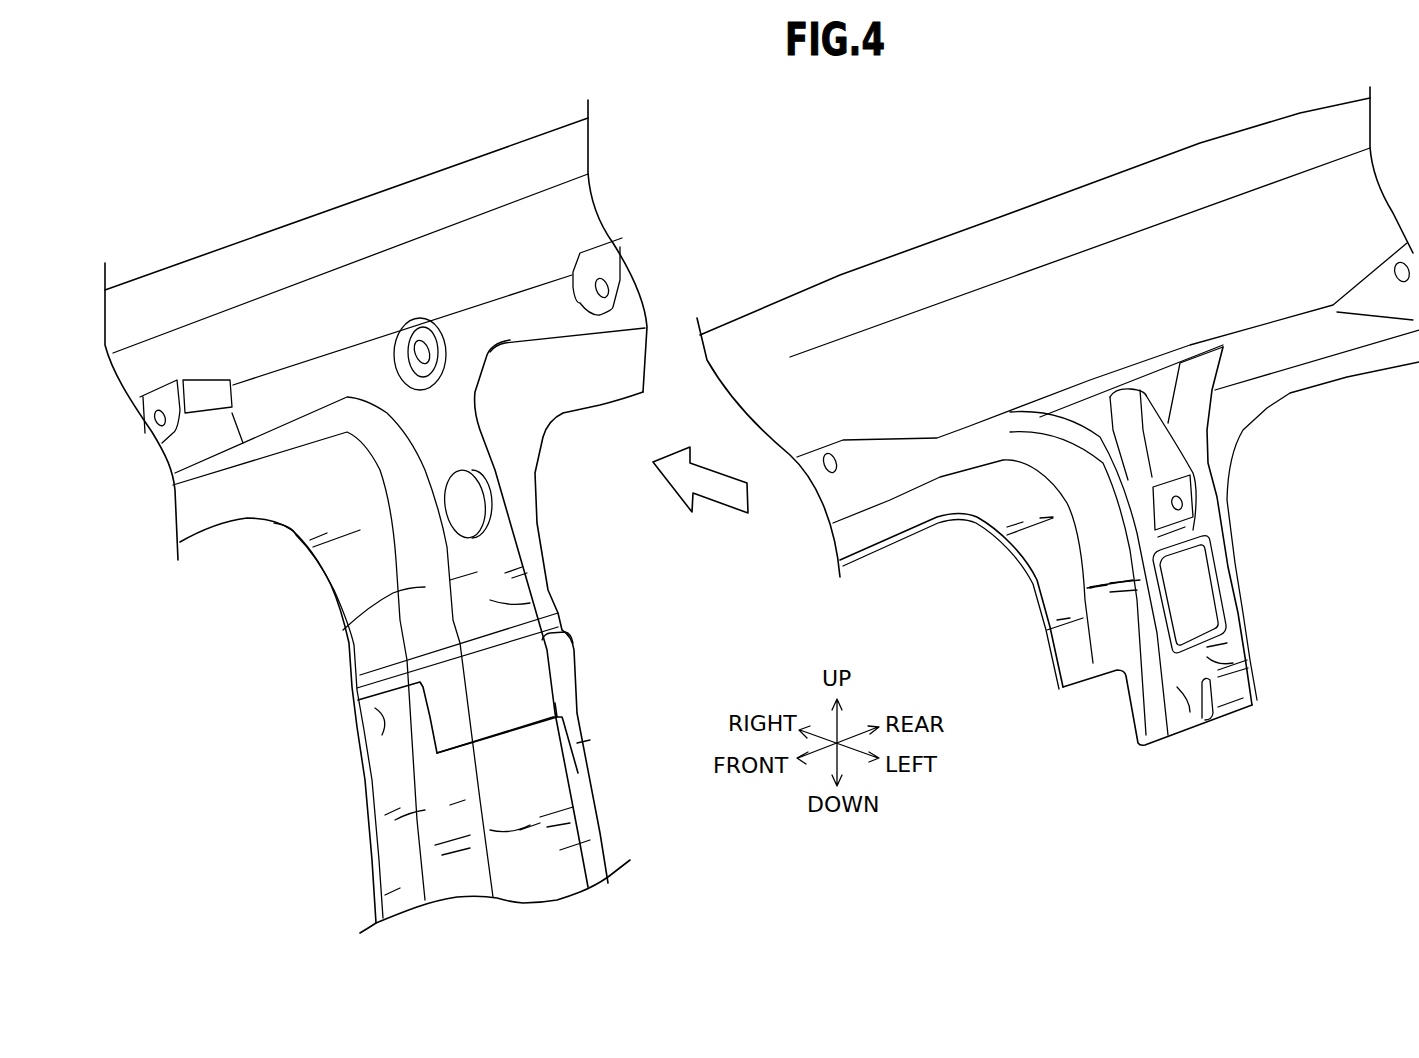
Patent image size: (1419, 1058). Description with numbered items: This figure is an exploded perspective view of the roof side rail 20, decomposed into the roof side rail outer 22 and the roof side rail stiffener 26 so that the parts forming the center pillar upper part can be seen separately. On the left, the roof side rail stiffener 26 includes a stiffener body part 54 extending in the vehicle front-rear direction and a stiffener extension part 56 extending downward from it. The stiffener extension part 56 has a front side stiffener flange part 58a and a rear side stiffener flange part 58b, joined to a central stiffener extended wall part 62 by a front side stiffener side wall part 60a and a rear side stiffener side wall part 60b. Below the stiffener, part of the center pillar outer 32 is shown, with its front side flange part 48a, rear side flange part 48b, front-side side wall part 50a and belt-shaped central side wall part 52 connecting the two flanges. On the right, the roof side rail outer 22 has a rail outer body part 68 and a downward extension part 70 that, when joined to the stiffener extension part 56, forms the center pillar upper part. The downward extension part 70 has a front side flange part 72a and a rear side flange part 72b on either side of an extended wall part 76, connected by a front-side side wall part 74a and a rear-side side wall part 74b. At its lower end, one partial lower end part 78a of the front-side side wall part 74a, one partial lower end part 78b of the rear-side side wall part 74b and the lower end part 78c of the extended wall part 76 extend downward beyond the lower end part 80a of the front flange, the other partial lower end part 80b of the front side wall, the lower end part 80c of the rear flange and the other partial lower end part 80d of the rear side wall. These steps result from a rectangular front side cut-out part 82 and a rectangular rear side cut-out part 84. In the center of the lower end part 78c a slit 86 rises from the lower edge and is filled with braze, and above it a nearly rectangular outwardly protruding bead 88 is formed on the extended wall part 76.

The roof side rail 20 is at (718, 135).
The roof side rail outer 22 is at (1044, 183).
The roof side rail stiffener 26 is at (331, 193).
The center pillar outer 32 is at (624, 830).
The front side flange part 48a is at (387, 708).
The rear side flange part 48b is at (557, 670).
The front-side side wall part 50a is at (417, 740).
The central side wall part 52 is at (530, 773).
The stiffener body part 54 is at (450, 263).
The stiffener extension part 56 is at (534, 529).
The front side stiffener flange part 58a is at (357, 572).
The rear side stiffener flange part 58b is at (517, 483).
The front side stiffener side wall part 60a is at (343, 627).
The rear side stiffener side wall part 60b is at (532, 563).
The stiffener extended wall part 62 is at (535, 597).
The rail outer body part 68 is at (1170, 255).
The downward extension part 70 is at (1238, 508).
The front side flange part 72a is at (1020, 560).
The rear side flange part 72b is at (1242, 597).
The front-side side wall part 74a is at (1103, 562).
The rear-side side wall part 74b is at (1256, 608).
The extended wall part 76 is at (1177, 737).
The one partial lower end part of the front-side side wall part 78a is at (1150, 743).
The one partial lower end part of the rear-side side wall part 78b is at (1243, 715).
The lower end part of the extended wall part 78c is at (1193, 727).
The lower end part of the front side flange part 80a is at (1077, 692).
The other partial lower end part of the front-side side wall part 80b is at (1110, 680).
The lower end part of the rear side flange part 80c is at (1263, 647).
The other partial lower end part of the rear-side side wall part 80d is at (1253, 663).
The front side cut-out part 82 is at (1113, 673).
The rear side cut-out part 84 is at (1253, 682).
The slit 86 is at (1215, 723).
The bead 88 is at (1195, 565).